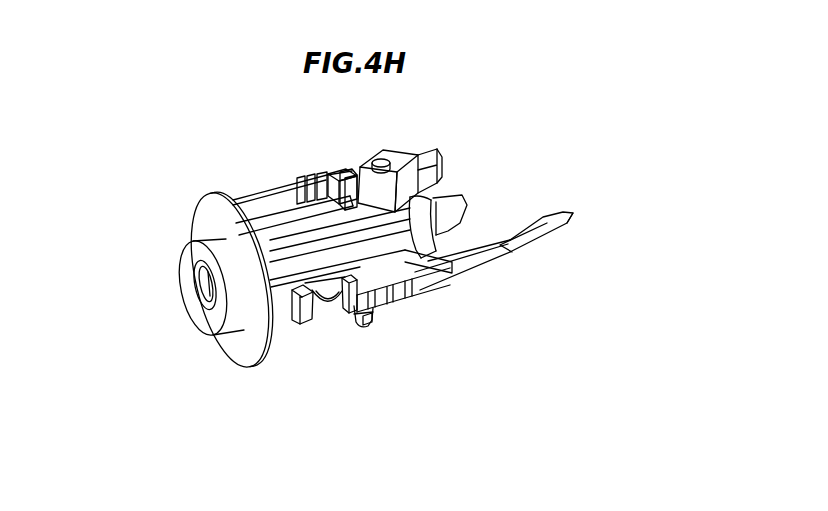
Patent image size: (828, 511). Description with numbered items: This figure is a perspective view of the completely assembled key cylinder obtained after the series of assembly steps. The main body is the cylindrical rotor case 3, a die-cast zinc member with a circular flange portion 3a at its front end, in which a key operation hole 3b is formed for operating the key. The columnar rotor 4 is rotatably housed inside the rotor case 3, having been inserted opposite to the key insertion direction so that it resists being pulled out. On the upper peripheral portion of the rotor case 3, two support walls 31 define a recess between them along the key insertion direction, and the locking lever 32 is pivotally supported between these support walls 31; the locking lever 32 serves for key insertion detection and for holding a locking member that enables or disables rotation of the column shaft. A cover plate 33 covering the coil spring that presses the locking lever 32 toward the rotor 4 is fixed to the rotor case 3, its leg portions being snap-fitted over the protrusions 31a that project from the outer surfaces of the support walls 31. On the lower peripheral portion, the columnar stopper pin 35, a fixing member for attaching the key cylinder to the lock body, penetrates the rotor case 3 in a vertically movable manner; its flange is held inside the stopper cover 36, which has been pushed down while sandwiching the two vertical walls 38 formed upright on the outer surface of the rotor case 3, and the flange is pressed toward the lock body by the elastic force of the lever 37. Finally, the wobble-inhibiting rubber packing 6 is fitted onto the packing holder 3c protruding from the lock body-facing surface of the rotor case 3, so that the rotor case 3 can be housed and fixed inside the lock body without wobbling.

The rotor case 3 is at (397, 267).
The flange portion 3a is at (246, 353).
The key operation hole 3b is at (207, 292).
The packing holder 3c is at (305, 324).
The rotor 4 is at (422, 217).
The rubber packing 6 is at (326, 296).
The support walls 31 is at (465, 247).
The protrusions 31a is at (358, 308).
The locking lever 32 is at (523, 248).
The cover plate 33 is at (370, 317).
The stopper pin 35 is at (383, 160).
The stopper cover 36 is at (400, 172).
The lever 37 is at (349, 192).
The vertical walls 38 is at (285, 210).